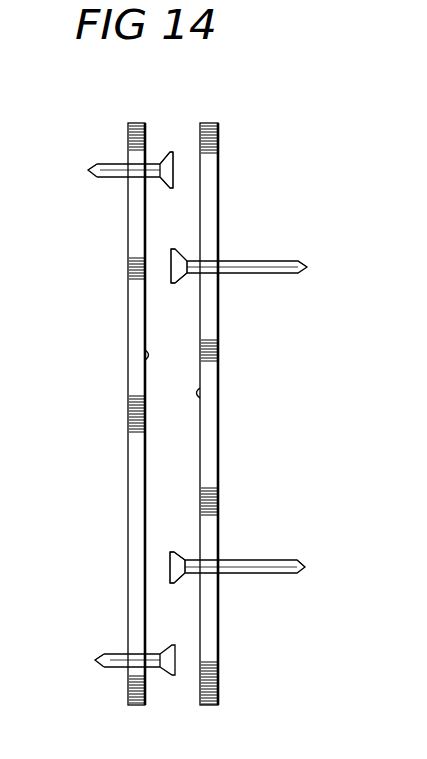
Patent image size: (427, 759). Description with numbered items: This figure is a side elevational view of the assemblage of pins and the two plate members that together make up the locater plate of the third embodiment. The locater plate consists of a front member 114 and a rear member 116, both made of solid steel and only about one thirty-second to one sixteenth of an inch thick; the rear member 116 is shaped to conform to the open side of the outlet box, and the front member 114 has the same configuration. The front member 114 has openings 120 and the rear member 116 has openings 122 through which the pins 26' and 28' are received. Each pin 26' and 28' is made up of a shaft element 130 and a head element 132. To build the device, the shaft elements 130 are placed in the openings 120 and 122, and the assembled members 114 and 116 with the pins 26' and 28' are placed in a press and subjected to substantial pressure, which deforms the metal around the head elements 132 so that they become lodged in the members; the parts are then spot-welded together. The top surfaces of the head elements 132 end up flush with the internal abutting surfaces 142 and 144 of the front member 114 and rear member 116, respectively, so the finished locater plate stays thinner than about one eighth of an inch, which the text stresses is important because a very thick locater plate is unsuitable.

The front member 114 is at (215, 452).
The rear member 116 is at (135, 447).
The opening 120 is at (218, 262).
The opening 122 is at (128, 163).
The shaft element 130 is at (116, 177).
The head element 132 is at (176, 150).
The internal abutting surface 142 is at (200, 392).
The internal abutting surface 144 is at (145, 353).
The pin 26' is at (88, 451).
The pin 28' is at (318, 428).